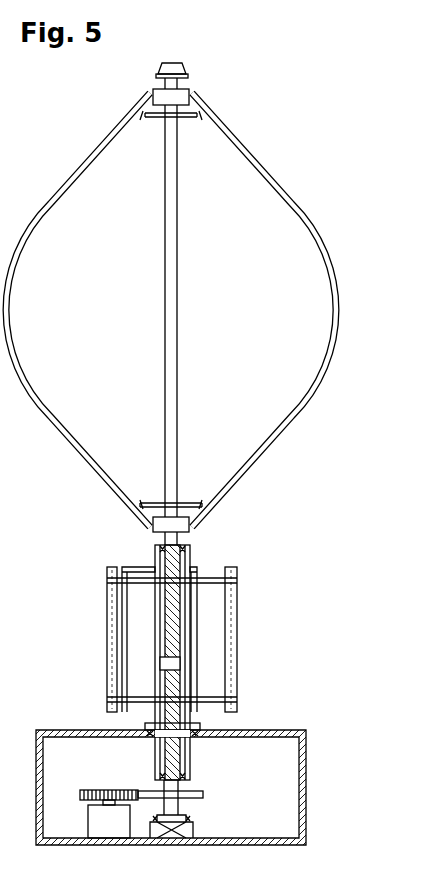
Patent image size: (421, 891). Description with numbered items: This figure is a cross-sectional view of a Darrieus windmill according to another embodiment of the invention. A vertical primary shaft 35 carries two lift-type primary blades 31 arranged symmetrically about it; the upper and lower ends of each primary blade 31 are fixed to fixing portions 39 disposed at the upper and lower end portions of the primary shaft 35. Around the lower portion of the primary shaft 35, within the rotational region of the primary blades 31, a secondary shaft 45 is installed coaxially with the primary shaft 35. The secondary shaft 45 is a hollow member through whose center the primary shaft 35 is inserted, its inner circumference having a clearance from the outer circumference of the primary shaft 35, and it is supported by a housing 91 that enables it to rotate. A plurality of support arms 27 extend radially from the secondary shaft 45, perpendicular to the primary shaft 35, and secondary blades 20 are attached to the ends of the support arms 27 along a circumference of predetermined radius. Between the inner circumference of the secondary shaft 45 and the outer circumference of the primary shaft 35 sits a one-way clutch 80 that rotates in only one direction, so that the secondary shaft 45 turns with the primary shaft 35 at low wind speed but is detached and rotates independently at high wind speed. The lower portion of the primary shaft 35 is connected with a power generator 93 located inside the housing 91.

The secondary blades 20 is at (175, 612).
The support arms 27 is at (135, 575).
The primary blades 31 is at (337, 313).
The primary shaft 35 is at (179, 223).
The fixing portions 39 is at (187, 93).
The secondary shaft 45 is at (186, 552).
The one-way clutch 80 is at (179, 664).
The housing 91 is at (306, 758).
The power generator 93 is at (78, 827).